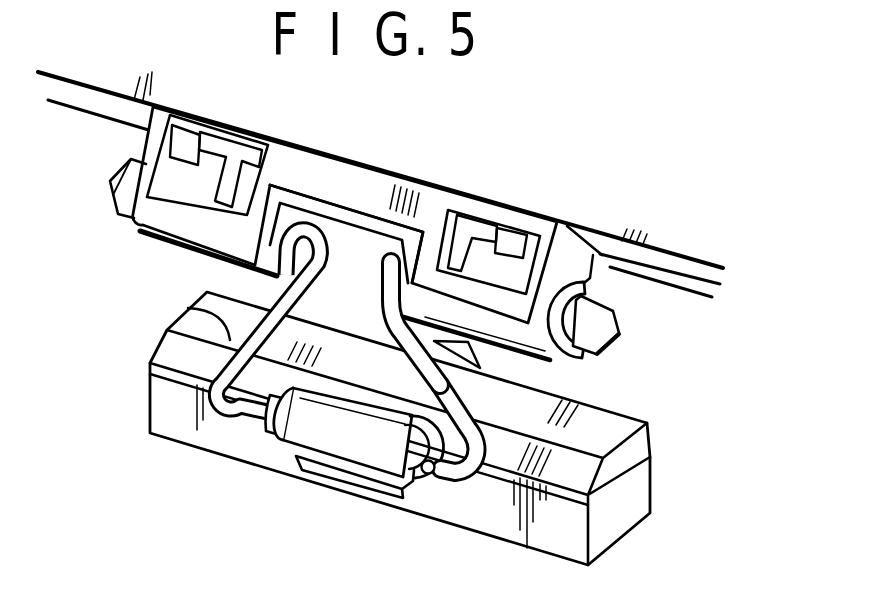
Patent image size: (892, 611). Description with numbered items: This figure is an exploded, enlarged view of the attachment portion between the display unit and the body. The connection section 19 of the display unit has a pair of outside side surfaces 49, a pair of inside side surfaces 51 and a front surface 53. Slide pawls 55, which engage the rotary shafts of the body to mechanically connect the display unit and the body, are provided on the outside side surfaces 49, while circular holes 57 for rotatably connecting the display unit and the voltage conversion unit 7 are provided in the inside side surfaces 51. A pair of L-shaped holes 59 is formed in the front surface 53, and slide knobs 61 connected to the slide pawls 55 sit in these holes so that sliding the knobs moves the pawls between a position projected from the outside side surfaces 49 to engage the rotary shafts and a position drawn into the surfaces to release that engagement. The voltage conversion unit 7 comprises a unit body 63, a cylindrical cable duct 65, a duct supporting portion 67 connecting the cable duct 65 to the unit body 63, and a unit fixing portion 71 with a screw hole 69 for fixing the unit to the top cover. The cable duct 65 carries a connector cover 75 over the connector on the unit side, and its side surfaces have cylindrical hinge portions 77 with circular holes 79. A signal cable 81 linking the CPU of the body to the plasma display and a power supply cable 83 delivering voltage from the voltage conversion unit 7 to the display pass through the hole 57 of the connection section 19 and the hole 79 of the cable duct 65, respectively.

The voltage conversion unit 7 is at (490, 505).
The connection section 19 is at (138, 236).
The outside side surfaces 49 is at (600, 277).
The inside side surfaces 51 is at (318, 199).
The front surface 53 is at (372, 188).
The slide pawls 55 is at (107, 186).
The circular holes 57 is at (285, 282).
The L-shaped holes 59 is at (238, 168).
The slide knobs 61 is at (188, 128).
The unit body 63 is at (650, 452).
The cable duct 65 is at (292, 445).
The duct supporting portion 67 is at (380, 408).
The screw hole 69 is at (390, 322).
The unit fixing portion 71 is at (465, 350).
The connector cover 75 is at (340, 478).
The cylindrical hinge portions 77 is at (263, 430).
The circular holes 79 is at (430, 474).
The signal cable 81 is at (200, 305).
The power supply cable 83 is at (455, 483).